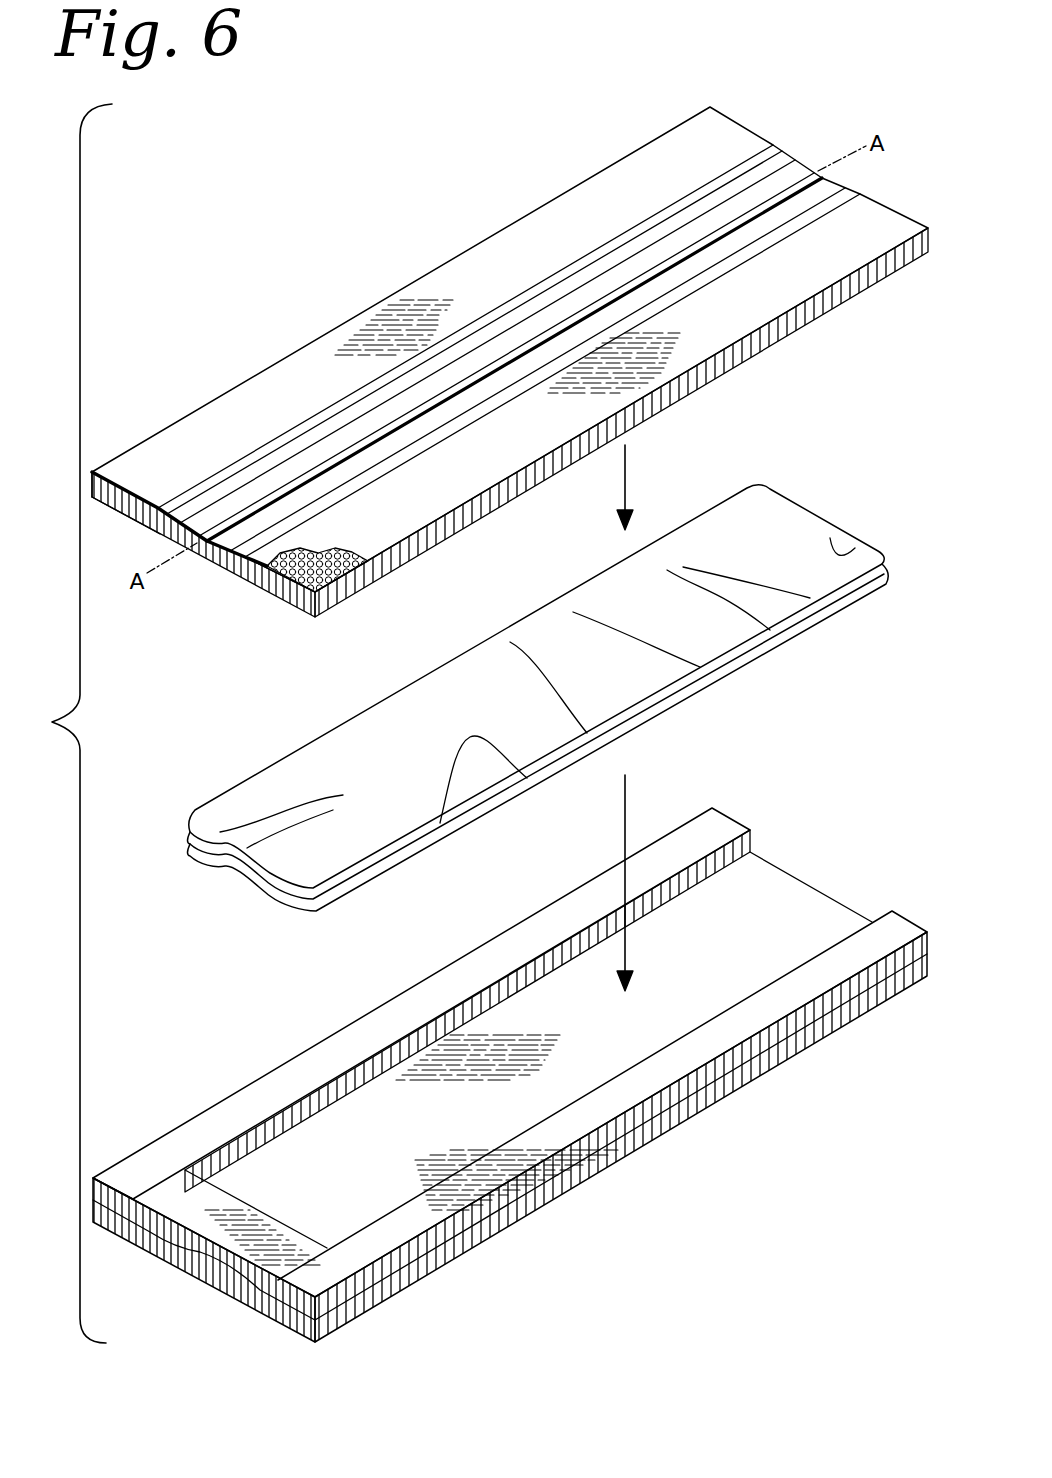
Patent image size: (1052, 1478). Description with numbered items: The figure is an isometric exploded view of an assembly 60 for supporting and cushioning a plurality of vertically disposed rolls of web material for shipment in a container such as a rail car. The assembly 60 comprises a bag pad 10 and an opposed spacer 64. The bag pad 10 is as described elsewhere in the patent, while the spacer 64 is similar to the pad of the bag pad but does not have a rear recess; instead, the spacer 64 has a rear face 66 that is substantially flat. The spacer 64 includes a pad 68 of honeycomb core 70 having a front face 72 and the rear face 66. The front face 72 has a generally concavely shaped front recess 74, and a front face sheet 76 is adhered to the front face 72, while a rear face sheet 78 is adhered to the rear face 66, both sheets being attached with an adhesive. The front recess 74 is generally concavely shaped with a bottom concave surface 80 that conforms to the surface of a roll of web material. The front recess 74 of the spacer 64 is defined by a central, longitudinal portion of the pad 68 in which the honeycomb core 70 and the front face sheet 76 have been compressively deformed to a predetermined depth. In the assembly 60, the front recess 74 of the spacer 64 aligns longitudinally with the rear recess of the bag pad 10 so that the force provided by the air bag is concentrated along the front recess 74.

The seat cushion assembly 60 is at (233, 246).
The top panel 68 is at (128, 452).
The top surface 72 is at (629, 198).
The ridge 80 is at (686, 230).
The groove 74 is at (490, 347).
The top surface portion 76 is at (211, 448).
The front edge face 66 is at (262, 580).
The side edge 70 is at (124, 508).
The side edge face 64 is at (812, 343).
The honeycomb core 78 is at (322, 610).
The cushion pad 10 is at (857, 512).